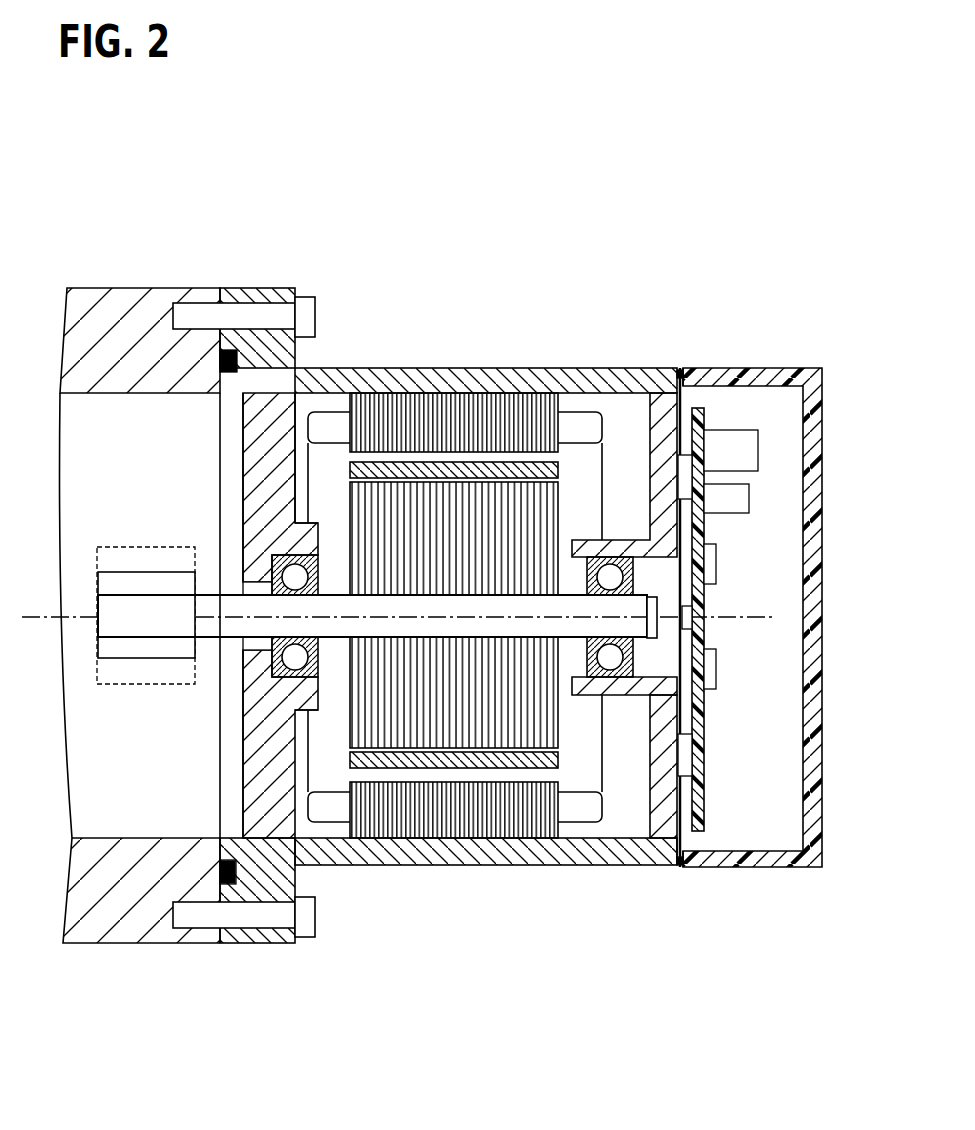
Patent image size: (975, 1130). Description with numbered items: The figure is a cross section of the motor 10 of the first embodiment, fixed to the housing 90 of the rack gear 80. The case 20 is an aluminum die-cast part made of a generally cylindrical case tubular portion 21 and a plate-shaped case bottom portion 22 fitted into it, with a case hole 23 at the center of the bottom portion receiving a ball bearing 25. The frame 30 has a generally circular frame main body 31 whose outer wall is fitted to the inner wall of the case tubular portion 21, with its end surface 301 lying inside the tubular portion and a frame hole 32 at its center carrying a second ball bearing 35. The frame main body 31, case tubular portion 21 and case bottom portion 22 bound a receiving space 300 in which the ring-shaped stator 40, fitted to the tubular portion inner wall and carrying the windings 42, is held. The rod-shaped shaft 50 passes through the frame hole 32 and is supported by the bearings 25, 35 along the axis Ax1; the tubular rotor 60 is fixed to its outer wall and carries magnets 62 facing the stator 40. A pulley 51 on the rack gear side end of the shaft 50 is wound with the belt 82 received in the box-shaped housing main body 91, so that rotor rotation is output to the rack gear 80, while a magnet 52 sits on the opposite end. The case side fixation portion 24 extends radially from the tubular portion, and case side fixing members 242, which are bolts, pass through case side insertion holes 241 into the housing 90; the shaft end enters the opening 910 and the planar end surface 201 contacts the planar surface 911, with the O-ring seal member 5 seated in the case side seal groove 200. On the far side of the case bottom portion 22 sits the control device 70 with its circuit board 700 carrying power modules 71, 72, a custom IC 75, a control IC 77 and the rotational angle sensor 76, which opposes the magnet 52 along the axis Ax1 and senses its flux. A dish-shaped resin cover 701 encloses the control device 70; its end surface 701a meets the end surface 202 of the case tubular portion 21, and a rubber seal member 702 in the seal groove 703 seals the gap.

The motor 10 is at (551, 153).
The rack gear 80 is at (84, 296).
The housing 90 is at (113, 296).
The housing main body 91 is at (141, 296).
The case side fixation portion 24 is at (257, 296).
The case side insertion holes 241 is at (276, 330).
The case side fixing members 242 is at (316, 318).
The opening 910 is at (298, 368).
The surface 911 is at (236, 872).
The seal member 5 is at (228, 881).
The end surface 201 is at (220, 840).
The case side seal groove 200 is at (222, 870).
The frame 30 is at (243, 443).
The frame main body 31 is at (243, 472).
The receiving space 300 is at (323, 503).
The end surface 301 is at (240, 798).
The frame hole 32 is at (278, 648).
The bearing 35 is at (297, 660).
The case 20 is at (521, 388).
The case tubular portion 21 is at (551, 388).
The case bottom portion 22 is at (648, 478).
The case hole 23 is at (643, 660).
The bearing 25 is at (614, 668).
The seal groove 703 is at (672, 866).
The stator 40 is at (455, 392).
The windings 42 is at (583, 414).
The rotor 60 is at (458, 736).
The magnets 62 is at (518, 769).
The axis Ax1 is at (40, 620).
The belt 82 is at (105, 686).
The shaft 50 is at (174, 630).
The pulley 51 is at (142, 651).
The magnet 52 is at (653, 605).
The control device 70 is at (790, 637).
The cover 701 is at (748, 372).
The end surface 701a is at (677, 377).
The seal member 702 is at (680, 868).
The end surface 202 is at (681, 371).
The circuit board 700 is at (699, 410).
The power module 71 is at (690, 478).
The power module 72 is at (686, 757).
The custom IC 75 is at (714, 671).
The rotational angle sensor 76 is at (692, 621).
The control IC 77 is at (714, 567).